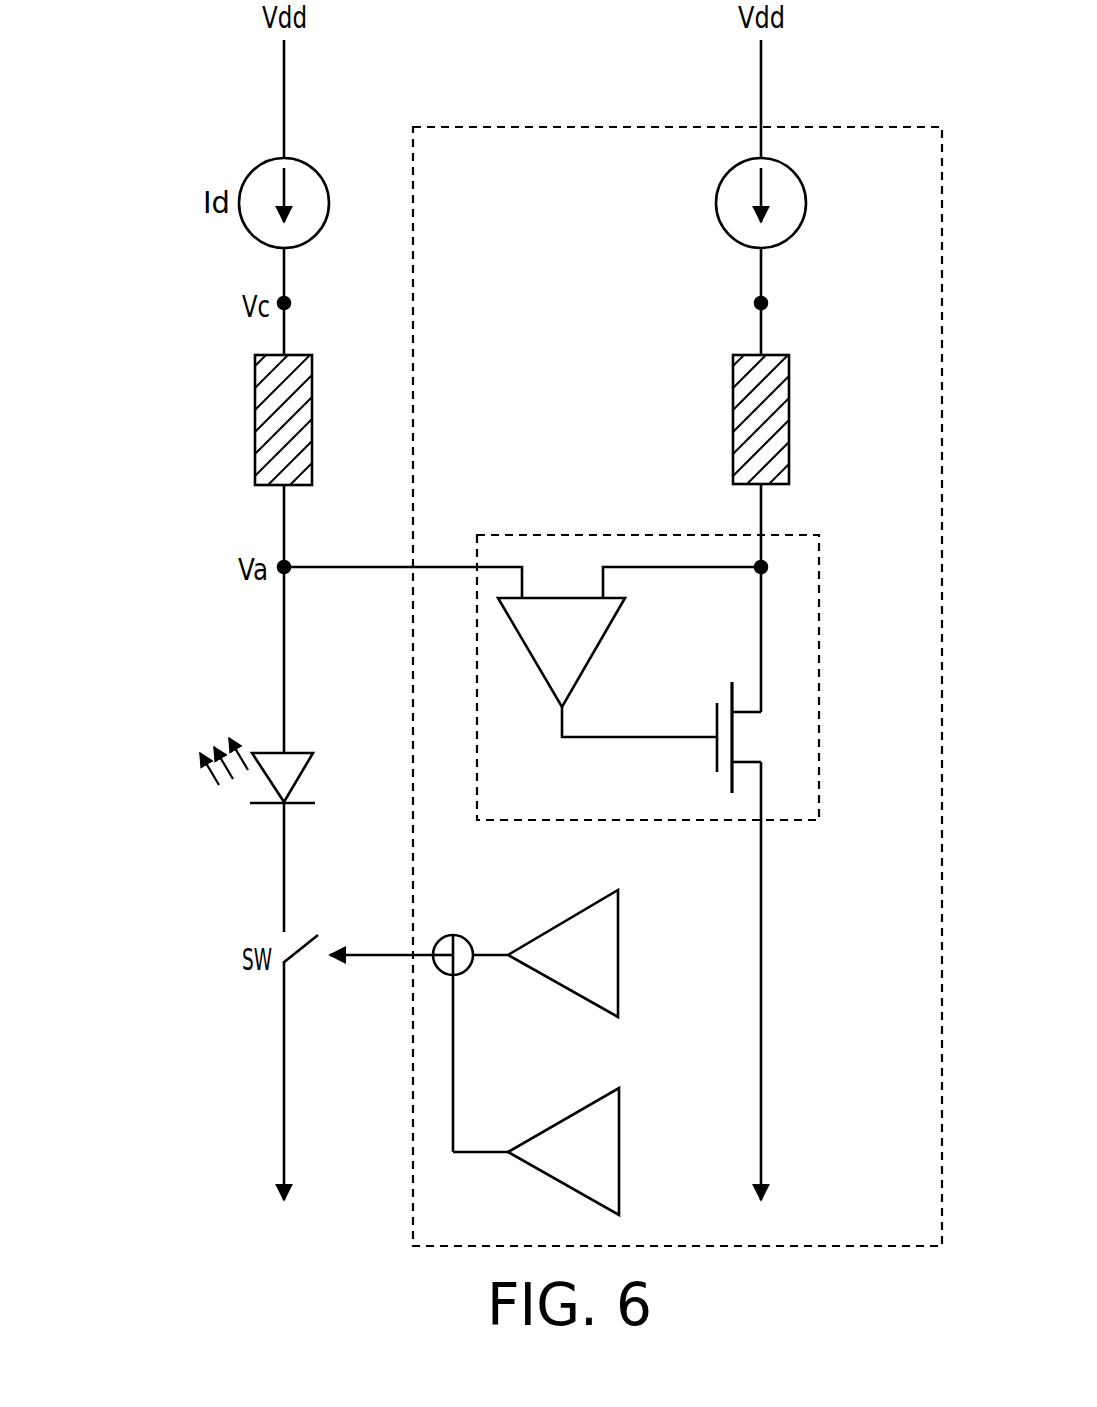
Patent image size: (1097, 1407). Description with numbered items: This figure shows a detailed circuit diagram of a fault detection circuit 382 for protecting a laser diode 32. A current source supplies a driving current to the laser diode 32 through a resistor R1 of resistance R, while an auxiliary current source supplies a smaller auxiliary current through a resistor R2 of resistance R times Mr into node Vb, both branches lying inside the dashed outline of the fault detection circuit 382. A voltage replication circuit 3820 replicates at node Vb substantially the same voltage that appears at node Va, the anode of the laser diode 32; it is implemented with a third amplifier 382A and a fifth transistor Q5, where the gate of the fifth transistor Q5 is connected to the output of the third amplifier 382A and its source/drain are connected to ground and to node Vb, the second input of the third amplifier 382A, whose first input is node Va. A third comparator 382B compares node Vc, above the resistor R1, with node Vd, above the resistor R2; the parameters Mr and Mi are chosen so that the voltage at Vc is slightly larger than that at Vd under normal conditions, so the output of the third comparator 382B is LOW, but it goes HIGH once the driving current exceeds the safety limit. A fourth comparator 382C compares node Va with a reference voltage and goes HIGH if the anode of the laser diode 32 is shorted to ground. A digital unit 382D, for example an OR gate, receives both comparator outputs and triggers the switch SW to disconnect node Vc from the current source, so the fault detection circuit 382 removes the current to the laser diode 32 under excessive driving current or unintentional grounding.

The fault detection circuit 382 is at (897, 127).
The voltage replication circuit 3820 is at (819, 670).
The third amplifier 382A is at (593, 655).
The third comparator 382B is at (585, 908).
The fourth comparator 382C is at (585, 1105).
The digital unit 382D is at (453, 935).
The laser diode 32 is at (300, 770).
The resistor R1 is at (312, 420).
The resistor R2 is at (789, 420).
The fifth transistor Q5 is at (763, 737).